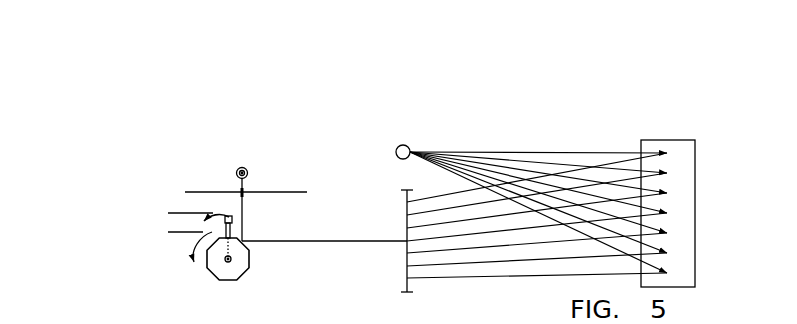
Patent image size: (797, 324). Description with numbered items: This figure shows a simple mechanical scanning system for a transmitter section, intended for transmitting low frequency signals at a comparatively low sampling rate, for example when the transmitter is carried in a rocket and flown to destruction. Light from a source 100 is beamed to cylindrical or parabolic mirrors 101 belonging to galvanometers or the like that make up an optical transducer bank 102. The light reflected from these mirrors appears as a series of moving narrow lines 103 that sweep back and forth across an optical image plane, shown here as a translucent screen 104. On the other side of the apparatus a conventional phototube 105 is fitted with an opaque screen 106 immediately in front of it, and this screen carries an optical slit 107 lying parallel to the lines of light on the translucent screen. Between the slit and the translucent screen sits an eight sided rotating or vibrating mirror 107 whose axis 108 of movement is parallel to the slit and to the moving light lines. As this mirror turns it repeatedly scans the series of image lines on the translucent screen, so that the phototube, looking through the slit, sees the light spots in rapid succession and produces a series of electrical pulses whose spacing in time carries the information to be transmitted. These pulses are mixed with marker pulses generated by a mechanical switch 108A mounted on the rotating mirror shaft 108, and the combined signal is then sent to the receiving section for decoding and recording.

The source 100 is at (410, 145).
The mirrors 101 is at (590, 188).
The optical transducer bank 102 is at (585, 158).
The moving narrow lines 103 is at (441, 281).
The translucent screen 104 is at (324, 193).
The phototube 105 is at (243, 166).
The opaque screen 106 is at (197, 197).
The optical slit / rotating or vibrating mirror 107 is at (247, 197).
The axis / rotating mirror shaft 108 is at (231, 259).
The mechanical switch 108A is at (200, 221).